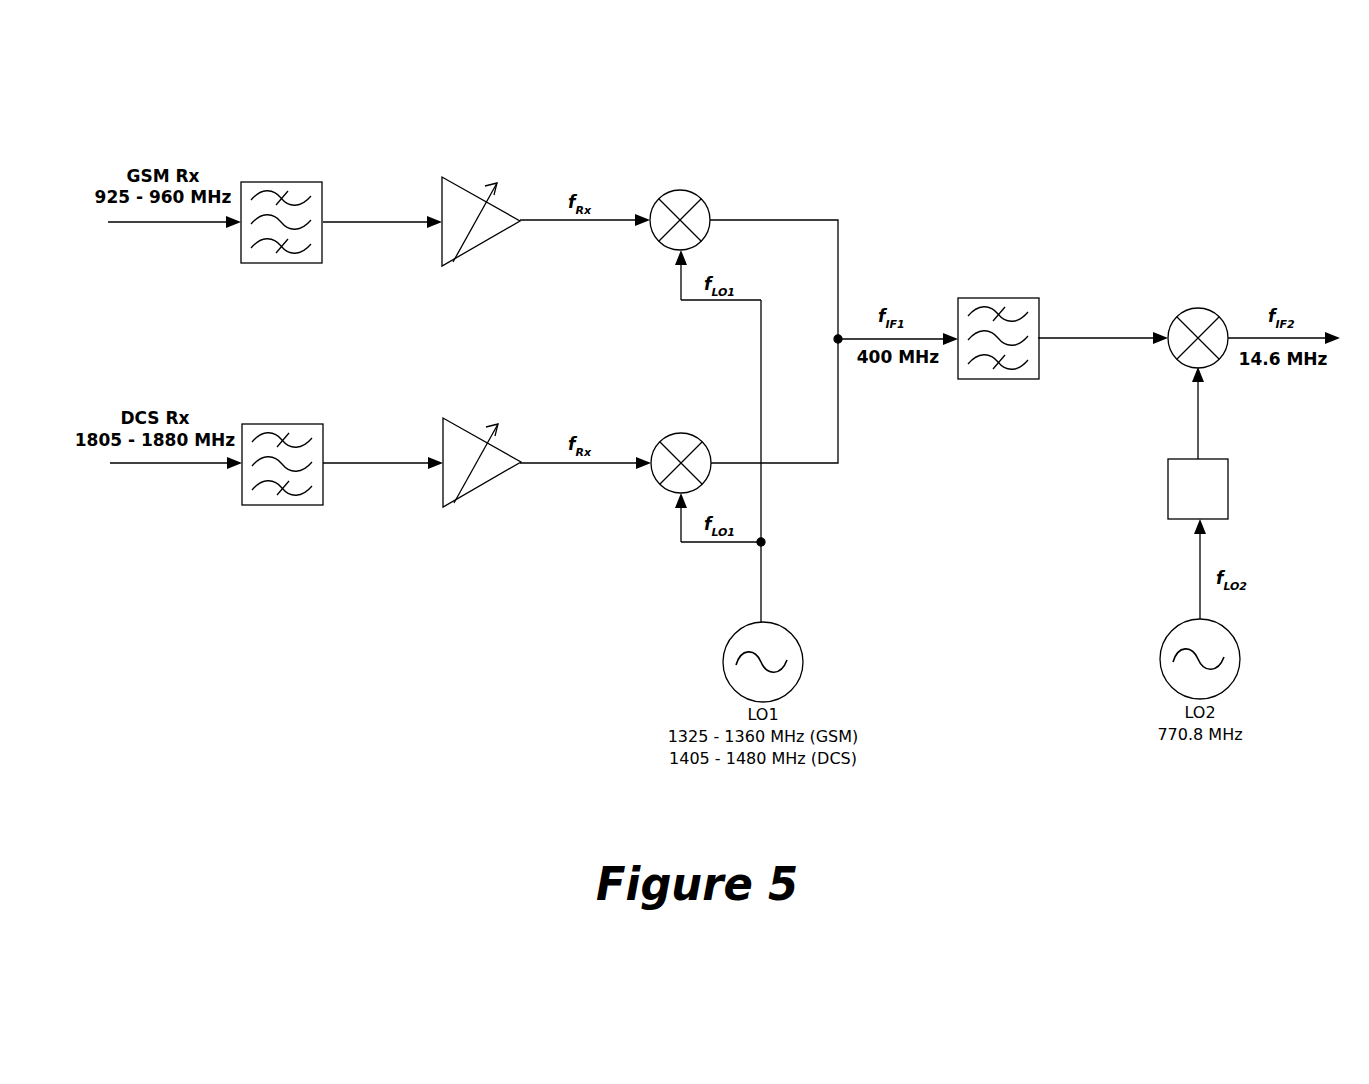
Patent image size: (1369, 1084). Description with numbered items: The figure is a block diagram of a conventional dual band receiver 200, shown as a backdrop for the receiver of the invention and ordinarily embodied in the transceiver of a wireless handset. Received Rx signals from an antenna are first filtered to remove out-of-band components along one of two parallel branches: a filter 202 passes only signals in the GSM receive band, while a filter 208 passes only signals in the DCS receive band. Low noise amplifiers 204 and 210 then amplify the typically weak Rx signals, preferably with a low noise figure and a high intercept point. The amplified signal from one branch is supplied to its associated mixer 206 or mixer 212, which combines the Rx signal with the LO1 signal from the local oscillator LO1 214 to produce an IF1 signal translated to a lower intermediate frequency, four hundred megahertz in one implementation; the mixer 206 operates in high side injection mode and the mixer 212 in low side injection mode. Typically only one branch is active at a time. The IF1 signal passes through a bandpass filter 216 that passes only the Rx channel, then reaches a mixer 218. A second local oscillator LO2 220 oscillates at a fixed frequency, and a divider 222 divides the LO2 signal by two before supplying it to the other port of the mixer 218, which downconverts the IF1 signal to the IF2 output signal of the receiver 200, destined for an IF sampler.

The dual band receiver 200 is at (970, 190).
The filter 202 is at (281, 182).
The low noise amplifier 204 is at (455, 180).
The mixer 206 is at (681, 190).
The filter 208 is at (283, 424).
The low noise amplifier 210 is at (455, 420).
The mixer 212 is at (680, 431).
The local oscillator LO1 214 is at (803, 660).
The filter 216 is at (1000, 298).
The mixer 218 is at (1200, 308).
The second local oscillator LO2 220 is at (1240, 658).
The divider 222 is at (1230, 487).